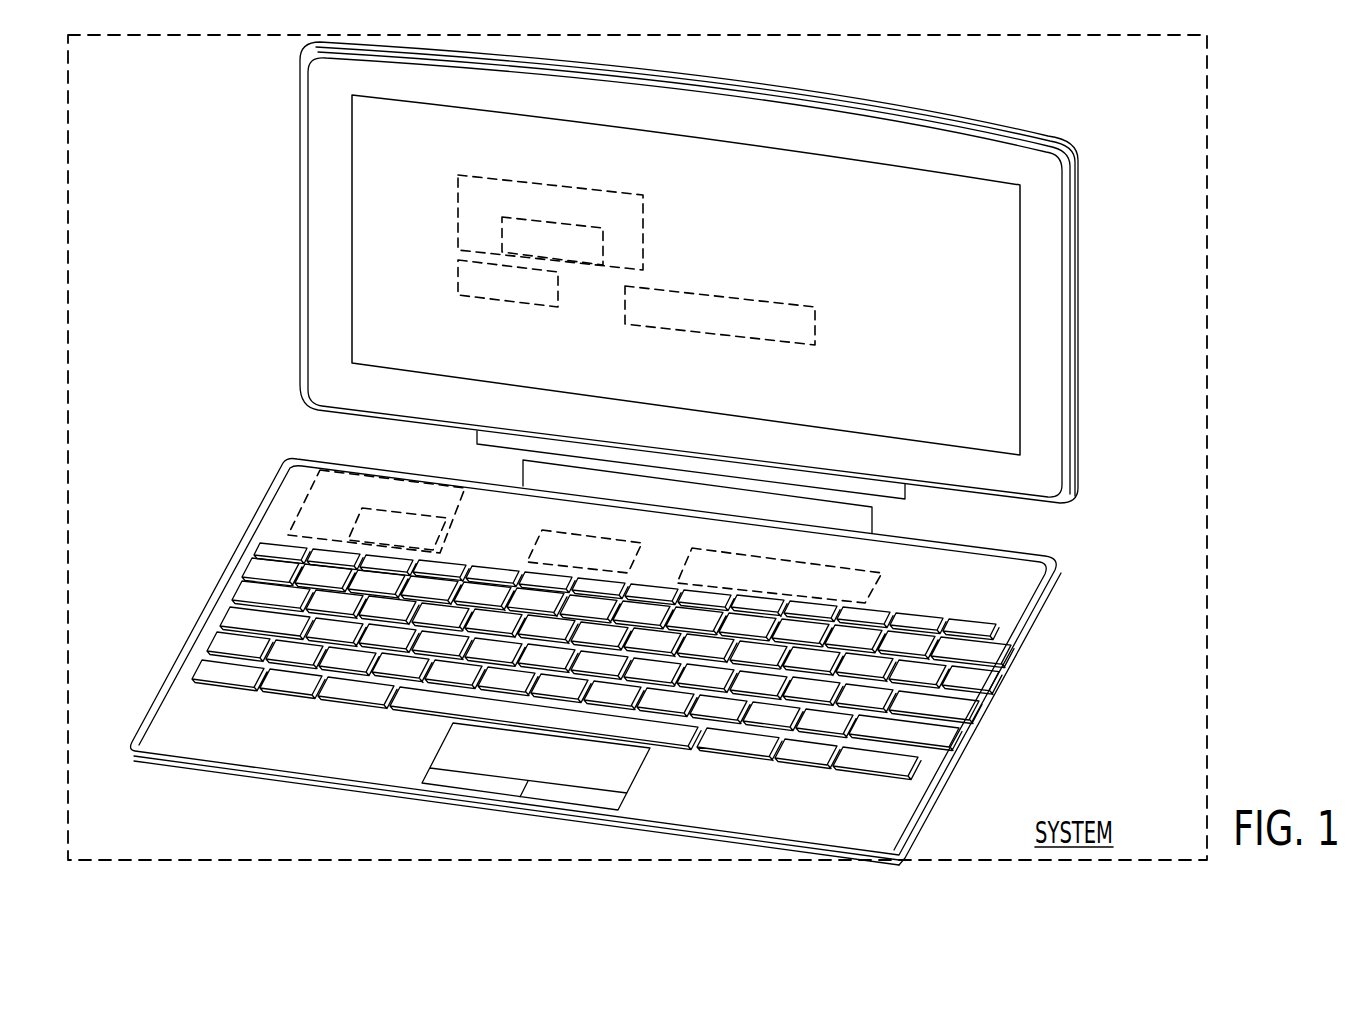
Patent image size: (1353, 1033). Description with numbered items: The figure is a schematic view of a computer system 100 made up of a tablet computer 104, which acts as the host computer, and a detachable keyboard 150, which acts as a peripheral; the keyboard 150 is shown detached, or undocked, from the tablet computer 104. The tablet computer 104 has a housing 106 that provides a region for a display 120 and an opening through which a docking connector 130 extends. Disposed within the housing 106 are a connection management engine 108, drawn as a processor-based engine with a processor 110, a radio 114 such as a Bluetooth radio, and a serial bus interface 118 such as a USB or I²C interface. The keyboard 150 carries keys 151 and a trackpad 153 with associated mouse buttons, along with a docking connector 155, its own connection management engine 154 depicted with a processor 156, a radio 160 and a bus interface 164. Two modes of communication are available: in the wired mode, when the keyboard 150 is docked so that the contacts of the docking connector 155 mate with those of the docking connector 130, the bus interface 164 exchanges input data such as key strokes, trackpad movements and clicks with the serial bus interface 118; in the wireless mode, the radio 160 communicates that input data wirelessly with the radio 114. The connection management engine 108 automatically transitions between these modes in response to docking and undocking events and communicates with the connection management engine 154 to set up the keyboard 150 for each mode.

The computer system 100 is at (1224, 84).
The tablet computer 104 is at (1070, 162).
The housing 106 is at (970, 143).
The connection management engine 108 is at (458, 212).
The processor 110 is at (603, 243).
The radio 114 is at (458, 277).
The serial bus interface 118 is at (815, 325).
The display 120 is at (1022, 314).
The docking connector 130 is at (907, 490).
The detachable keyboard 150 is at (987, 693).
The keys 151 is at (237, 614).
The trackpad 153 is at (618, 767).
The connection management engine 154 is at (303, 500).
The docking connector 155 is at (877, 512).
The processor 156 is at (360, 521).
The radio 160 is at (538, 542).
The bus interface 164 is at (877, 594).